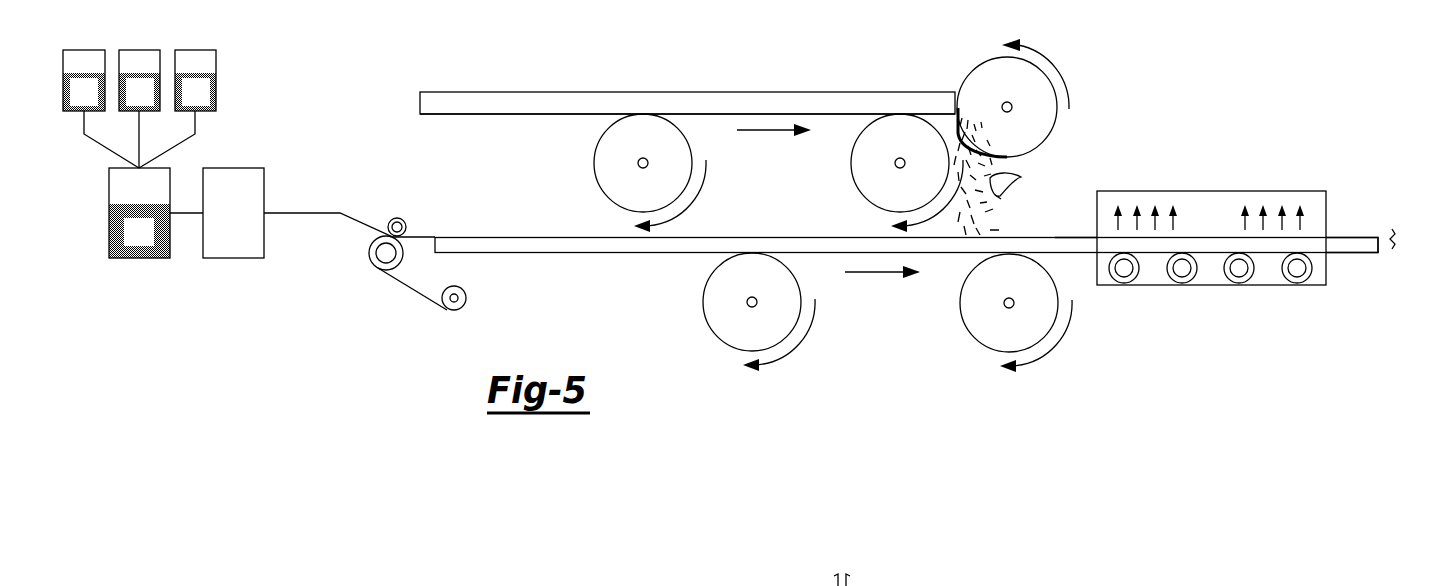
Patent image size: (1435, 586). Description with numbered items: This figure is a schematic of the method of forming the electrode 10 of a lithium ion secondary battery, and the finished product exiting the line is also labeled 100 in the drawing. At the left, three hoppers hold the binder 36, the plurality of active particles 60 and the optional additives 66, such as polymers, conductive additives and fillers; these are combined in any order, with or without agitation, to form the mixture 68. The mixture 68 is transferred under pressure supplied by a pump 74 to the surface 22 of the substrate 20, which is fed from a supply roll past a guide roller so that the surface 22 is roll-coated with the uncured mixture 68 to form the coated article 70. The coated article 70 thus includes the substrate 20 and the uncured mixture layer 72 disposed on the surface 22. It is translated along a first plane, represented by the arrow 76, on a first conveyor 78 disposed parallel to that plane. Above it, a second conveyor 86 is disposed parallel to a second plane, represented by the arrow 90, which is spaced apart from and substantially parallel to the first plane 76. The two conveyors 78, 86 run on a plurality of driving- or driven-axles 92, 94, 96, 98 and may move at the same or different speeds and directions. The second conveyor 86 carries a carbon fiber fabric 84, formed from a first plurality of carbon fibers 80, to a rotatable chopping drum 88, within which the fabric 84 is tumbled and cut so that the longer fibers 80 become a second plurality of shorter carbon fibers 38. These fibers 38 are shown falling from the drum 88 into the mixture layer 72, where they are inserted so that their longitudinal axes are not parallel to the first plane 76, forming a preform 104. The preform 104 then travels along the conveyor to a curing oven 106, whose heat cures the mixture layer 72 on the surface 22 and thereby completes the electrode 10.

The electrode 10 is at (1370, 191).
The coating system 100 is at (1362, 206).
The substrate 20 is at (397, 285).
The surface 22 is at (370, 256).
The binder 36 is at (151, 104).
The second plurality of carbon fibers 38 is at (1014, 177).
The plurality of active particles 60 is at (95, 104).
The additives 66 is at (207, 104).
The mixture 68 is at (150, 244).
The coated article 70 is at (733, 229).
The mixture layer 72 is at (503, 236).
The pump 74 is at (244, 224).
The first plane 76 is at (879, 275).
The first conveyor 78 is at (565, 255).
The first plurality of carbon fibers 80 is at (713, 92).
The carbon fiber fabric 84 is at (662, 92).
The second conveyor 86 is at (457, 115).
The rotatable chopping drum 88 is at (965, 81).
The second plane 90 is at (771, 133).
The axle 92 is at (595, 163).
The axle 94 is at (852, 163).
The axle 96 is at (702, 303).
The axle 98 is at (960, 303).
The preform 104 is at (1069, 225).
The curing oven 106 is at (1212, 190).